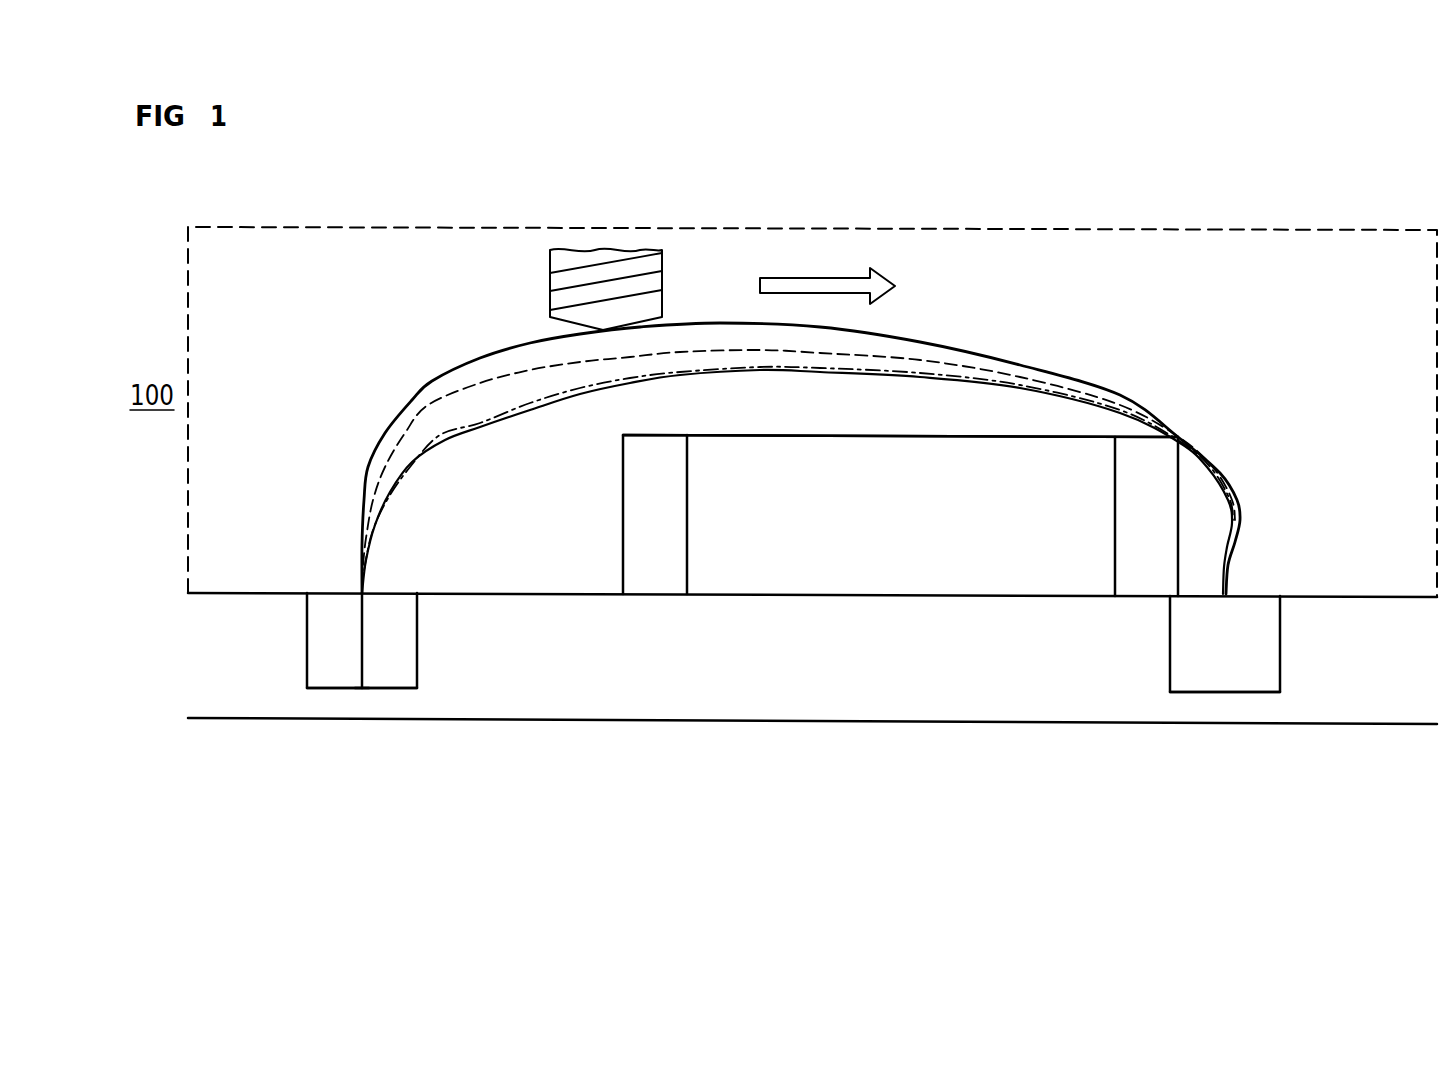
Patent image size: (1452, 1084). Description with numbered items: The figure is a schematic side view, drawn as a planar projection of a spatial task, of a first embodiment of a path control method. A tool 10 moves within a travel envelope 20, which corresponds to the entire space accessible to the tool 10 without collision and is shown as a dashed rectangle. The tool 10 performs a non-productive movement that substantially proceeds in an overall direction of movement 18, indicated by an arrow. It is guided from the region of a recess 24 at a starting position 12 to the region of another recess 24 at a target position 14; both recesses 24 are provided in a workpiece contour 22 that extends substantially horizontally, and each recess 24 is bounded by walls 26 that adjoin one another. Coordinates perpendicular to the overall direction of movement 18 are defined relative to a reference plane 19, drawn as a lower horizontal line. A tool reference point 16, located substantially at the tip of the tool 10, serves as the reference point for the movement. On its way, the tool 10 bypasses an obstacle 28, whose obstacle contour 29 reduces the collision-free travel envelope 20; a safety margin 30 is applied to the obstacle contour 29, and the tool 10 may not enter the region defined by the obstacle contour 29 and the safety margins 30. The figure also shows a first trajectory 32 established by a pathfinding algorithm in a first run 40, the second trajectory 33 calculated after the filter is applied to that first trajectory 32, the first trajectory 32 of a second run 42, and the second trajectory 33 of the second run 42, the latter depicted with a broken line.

The tool 10 is at (550, 283).
The starting position 12 is at (360, 677).
The target position 14 is at (1237, 594).
The tool reference point 16 is at (605, 330).
The overall direction of movement 18 is at (808, 277).
The reference plane 19 is at (241, 722).
The travel envelope 20 is at (1368, 262).
The workpiece contour 22 is at (228, 591).
The recess 24 is at (382, 670).
The wall 26 is at (306, 668).
The obstacle 28 is at (906, 563).
The obstacle contour 29 is at (648, 435).
The safety margin 30 is at (653, 563).
The first trajectory 32 is at (367, 456).
The second trajectory 33 is at (364, 470).
The first run 40 is at (478, 423).
The second run 42 is at (428, 406).